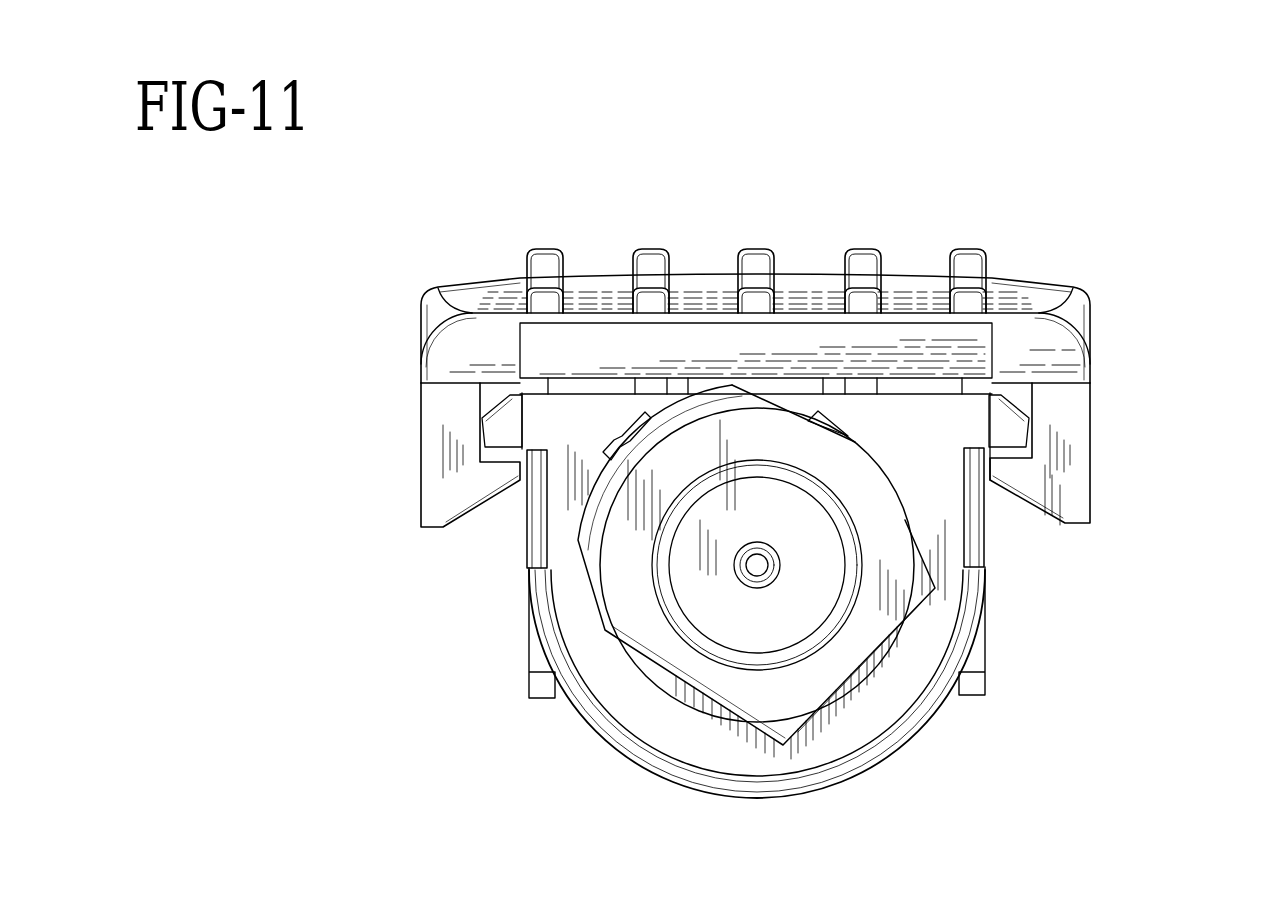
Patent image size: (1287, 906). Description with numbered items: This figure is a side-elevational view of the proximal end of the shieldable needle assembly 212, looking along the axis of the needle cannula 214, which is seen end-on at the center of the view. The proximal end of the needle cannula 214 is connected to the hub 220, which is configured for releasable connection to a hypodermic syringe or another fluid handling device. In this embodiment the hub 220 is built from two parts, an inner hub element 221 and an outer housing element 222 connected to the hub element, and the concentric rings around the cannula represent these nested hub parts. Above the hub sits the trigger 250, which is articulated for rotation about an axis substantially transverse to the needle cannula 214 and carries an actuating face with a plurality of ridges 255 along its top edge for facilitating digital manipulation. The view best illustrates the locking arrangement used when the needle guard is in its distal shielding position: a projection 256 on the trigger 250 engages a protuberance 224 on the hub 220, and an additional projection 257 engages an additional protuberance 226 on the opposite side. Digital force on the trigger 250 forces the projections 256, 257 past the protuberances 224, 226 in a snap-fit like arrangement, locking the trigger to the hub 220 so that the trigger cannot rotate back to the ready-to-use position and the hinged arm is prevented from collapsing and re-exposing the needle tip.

The shieldable needle assembly 212 is at (1150, 165).
The trigger 250 is at (1058, 345).
The ridges 255 is at (857, 265).
The protuberance 224 is at (507, 428).
The additional protuberance 226 is at (1015, 428).
The projection 256 is at (481, 485).
The additional projection 257 is at (1037, 482).
The inner hub element 221 is at (637, 717).
The outer housing element 222 is at (893, 703).
The hub 220 is at (670, 663).
The needle cannula 214 is at (757, 572).